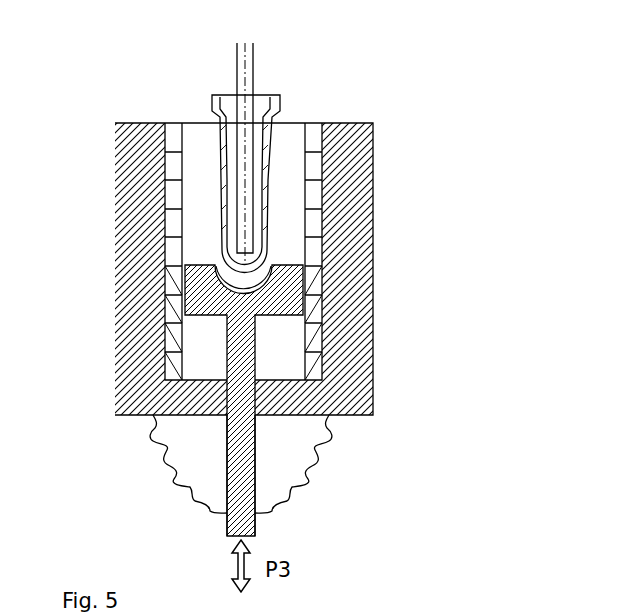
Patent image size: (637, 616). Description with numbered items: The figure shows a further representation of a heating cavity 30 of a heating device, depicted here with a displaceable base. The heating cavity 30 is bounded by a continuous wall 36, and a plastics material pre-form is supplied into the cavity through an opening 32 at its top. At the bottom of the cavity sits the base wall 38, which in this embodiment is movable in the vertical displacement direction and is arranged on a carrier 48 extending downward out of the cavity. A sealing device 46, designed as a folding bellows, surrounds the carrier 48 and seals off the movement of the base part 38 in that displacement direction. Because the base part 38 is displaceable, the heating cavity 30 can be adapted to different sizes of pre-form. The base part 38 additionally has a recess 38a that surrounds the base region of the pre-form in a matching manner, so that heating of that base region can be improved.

The heating cavity 30 is at (394, 163).
The opening 32 is at (283, 118).
The continuous wall 36 is at (306, 162).
The base wall 38 is at (212, 262).
The recess 38a is at (244, 283).
The sealing device 46 is at (313, 458).
The carrier 48 is at (241, 458).